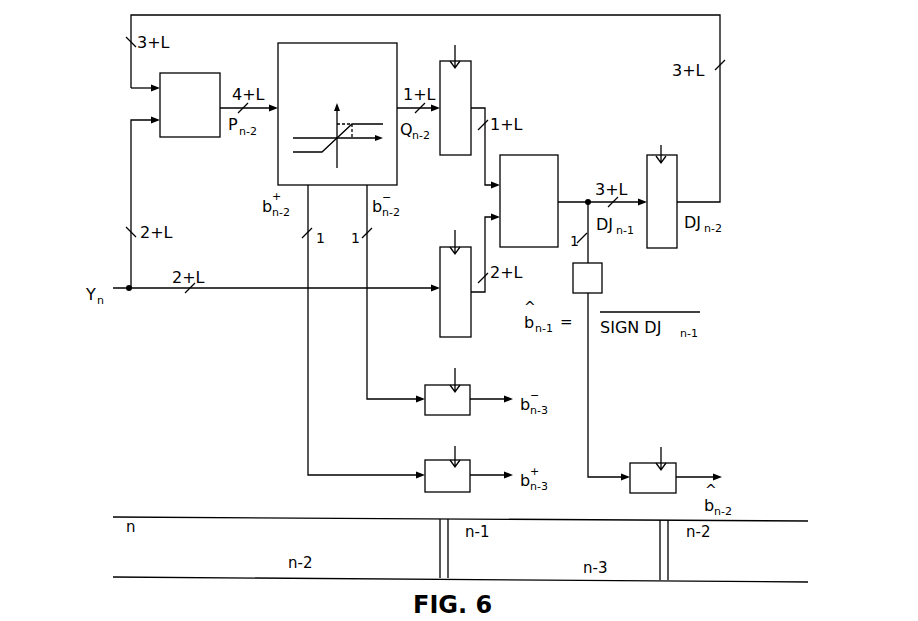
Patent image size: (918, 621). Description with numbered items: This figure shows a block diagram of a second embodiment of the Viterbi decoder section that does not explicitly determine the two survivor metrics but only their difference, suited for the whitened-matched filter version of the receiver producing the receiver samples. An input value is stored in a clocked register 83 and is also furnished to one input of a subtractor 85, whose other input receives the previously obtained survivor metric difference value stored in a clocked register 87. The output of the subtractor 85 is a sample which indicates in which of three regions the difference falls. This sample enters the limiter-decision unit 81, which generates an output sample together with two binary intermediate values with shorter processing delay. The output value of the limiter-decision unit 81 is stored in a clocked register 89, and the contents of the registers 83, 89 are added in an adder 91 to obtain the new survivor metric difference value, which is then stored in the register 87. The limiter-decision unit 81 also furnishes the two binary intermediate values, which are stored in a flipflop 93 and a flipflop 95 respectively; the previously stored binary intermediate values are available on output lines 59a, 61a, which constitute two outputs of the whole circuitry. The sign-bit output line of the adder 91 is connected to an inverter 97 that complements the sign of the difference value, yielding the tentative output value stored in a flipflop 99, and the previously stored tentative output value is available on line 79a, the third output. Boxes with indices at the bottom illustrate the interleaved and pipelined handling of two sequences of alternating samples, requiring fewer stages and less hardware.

The subtractor 85 is at (190, 73).
The limiter-decision unit 81 is at (365, 43).
The clocked register 89 is at (471, 73).
The clocked register 83 is at (440, 320).
The adder 91 is at (538, 155).
The clocked register 87 is at (650, 158).
The inverter 97 is at (602, 287).
The flipflop 95 is at (437, 385).
The flipflop 93 is at (437, 460).
The flipflop 99 is at (640, 463).
The output line 61a is at (478, 398).
The output line 59a is at (481, 474).
The output line 79a is at (687, 477).